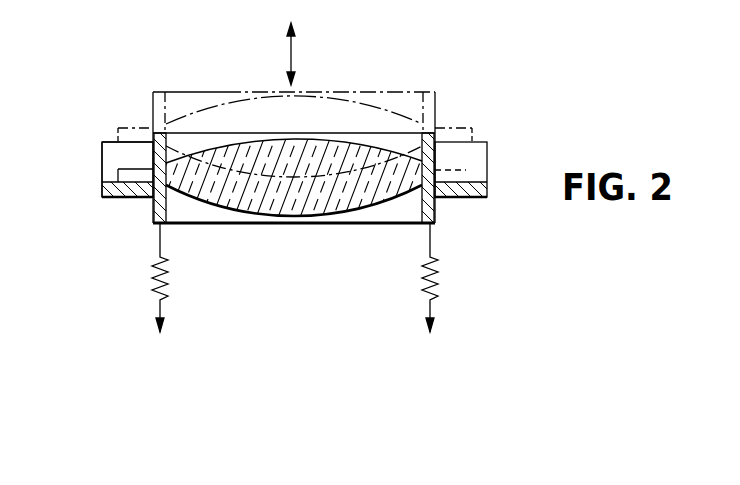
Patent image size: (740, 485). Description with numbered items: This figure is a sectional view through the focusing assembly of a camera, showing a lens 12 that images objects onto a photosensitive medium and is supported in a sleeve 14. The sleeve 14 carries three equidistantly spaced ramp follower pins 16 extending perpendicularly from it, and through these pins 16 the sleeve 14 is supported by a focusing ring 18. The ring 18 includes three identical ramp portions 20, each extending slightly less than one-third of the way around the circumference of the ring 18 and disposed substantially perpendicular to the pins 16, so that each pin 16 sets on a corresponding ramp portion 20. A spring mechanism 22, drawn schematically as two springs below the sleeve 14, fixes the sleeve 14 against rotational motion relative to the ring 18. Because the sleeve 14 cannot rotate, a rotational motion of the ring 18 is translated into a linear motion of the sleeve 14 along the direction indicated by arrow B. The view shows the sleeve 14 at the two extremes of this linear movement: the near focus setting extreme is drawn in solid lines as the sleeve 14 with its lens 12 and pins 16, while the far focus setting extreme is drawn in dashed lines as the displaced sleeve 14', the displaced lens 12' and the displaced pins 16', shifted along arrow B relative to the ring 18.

The lens 12 is at (293, 204).
The lens in far focus position 12' is at (294, 101).
The sleeve 14 is at (309, 141).
The sleeve in far focus position 14' is at (305, 72).
The ramp follower pin 16 is at (283, 164).
The ramp follower pin in far focus position 16' is at (301, 91).
The focusing ring 18 is at (102, 142).
The ramp portion 20 is at (112, 175).
The spring mechanism 22 is at (167, 288).
The arrow B is at (291, 55).